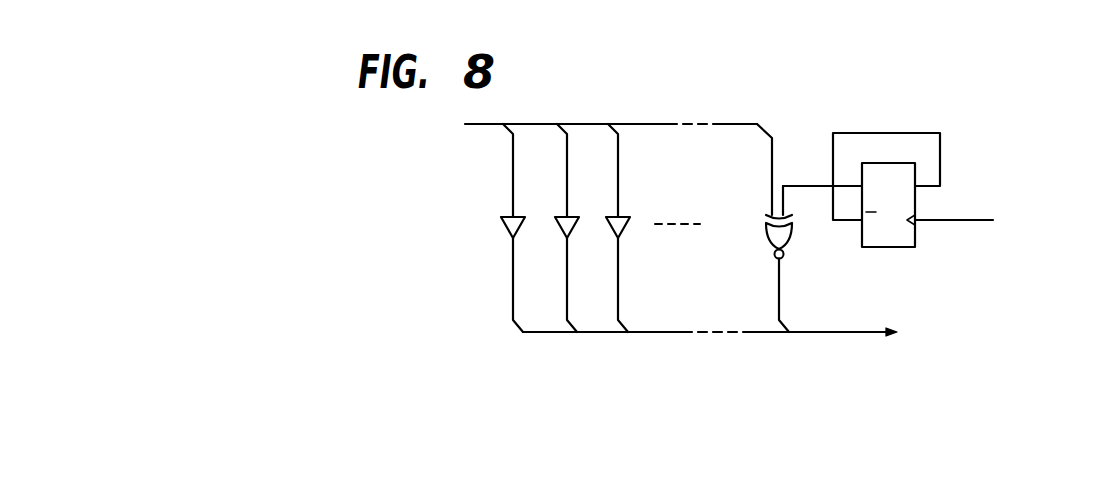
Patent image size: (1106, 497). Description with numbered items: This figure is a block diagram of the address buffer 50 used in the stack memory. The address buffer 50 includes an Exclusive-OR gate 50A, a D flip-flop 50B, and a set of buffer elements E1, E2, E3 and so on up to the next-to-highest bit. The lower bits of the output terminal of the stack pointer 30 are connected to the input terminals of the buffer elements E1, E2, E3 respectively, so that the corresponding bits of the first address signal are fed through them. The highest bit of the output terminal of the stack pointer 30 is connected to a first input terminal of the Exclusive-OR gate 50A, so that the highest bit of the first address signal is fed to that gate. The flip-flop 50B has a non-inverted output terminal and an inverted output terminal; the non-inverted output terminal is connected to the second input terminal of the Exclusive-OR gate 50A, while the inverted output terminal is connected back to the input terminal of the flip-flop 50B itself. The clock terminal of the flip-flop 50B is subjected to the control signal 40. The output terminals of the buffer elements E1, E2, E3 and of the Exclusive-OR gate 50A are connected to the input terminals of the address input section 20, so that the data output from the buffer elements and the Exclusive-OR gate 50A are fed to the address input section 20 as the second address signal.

The stack pointer 30 is at (556, 125).
The address input section 20 is at (779, 336).
The buffer element E1 is at (506, 230).
The buffer element E2 is at (560, 230).
The buffer element E3 is at (612, 230).
The address buffer 50 is at (741, 114).
The Exclusive-OR gate 50A is at (766, 242).
The D flip-flop 50B is at (878, 247).
The control signal 40 is at (986, 219).